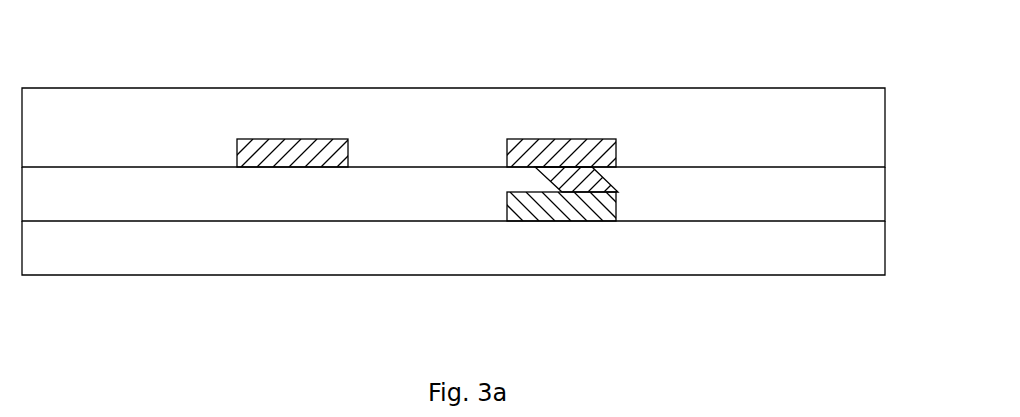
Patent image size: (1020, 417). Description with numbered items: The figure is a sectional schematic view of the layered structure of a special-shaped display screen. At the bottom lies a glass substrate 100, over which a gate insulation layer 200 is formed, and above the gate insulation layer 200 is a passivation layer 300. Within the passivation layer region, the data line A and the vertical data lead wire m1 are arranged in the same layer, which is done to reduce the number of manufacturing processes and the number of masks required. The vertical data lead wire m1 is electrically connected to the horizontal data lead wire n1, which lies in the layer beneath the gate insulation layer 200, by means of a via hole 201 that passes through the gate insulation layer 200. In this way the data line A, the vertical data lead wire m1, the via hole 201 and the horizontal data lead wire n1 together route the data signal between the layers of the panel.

The glass substrate 100 is at (303, 236).
The gate insulation layer 200 is at (142, 208).
The passivation layer 300 is at (88, 138).
The via hole 201 is at (620, 208).
The data line A is at (293, 139).
The vertical data lead wire m1 is at (565, 138).
The horizontal data lead wire n1 is at (560, 220).